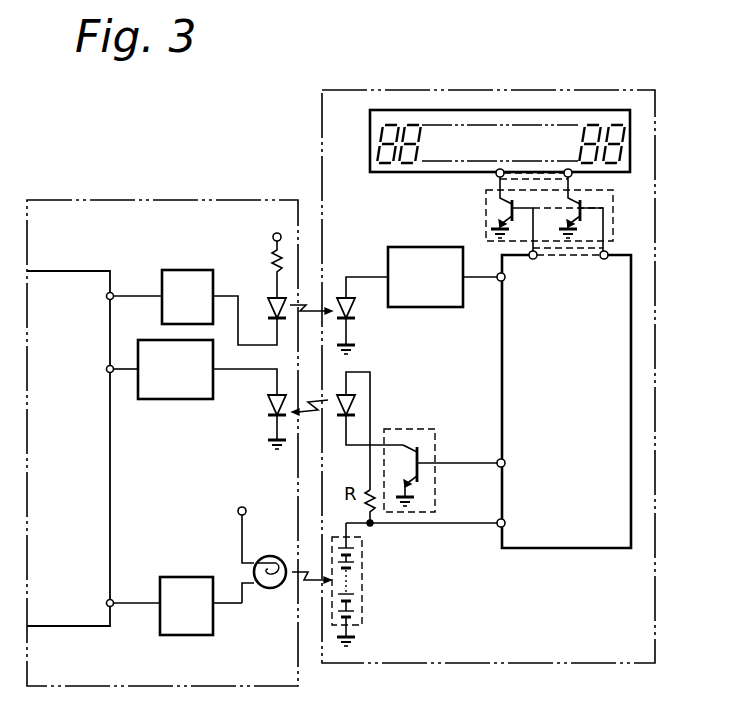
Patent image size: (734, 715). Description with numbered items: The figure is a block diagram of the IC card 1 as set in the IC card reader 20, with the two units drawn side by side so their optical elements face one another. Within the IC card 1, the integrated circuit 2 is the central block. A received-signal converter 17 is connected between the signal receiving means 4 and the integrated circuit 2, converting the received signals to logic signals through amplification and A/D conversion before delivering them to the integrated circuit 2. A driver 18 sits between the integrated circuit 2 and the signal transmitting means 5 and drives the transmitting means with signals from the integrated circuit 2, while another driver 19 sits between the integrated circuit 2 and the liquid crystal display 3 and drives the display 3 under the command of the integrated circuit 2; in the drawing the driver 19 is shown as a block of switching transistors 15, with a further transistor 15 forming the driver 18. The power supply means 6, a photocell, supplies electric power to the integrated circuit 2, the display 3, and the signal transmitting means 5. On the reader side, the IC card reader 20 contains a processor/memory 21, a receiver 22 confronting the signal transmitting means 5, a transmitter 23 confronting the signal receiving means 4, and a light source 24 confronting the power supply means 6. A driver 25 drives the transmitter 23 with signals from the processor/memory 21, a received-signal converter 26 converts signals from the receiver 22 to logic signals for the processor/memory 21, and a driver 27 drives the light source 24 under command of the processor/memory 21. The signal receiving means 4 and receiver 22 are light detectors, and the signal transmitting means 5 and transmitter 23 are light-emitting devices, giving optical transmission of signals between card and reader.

The IC card 1 is at (556, 90).
The integrated circuit 2 is at (632, 390).
The liquid crystal display 3 is at (480, 108).
The signal receiving means 4 is at (356, 306).
The signal transmitting means 5 is at (354, 397).
The power supply means 6 is at (364, 594).
The switching transistor 15 is at (486, 276).
The received-signal converter 17 is at (432, 308).
The driver 18 is at (421, 429).
The driver 19 is at (614, 215).
The IC card reader 20 is at (136, 198).
The processor/memory 21 is at (49, 268).
The receiver 22 is at (268, 408).
The transmitter 23 is at (268, 302).
The light source 24 is at (270, 590).
The driver 25 is at (181, 268).
The received-signal converter 26 is at (155, 401).
The driver 27 is at (180, 575).